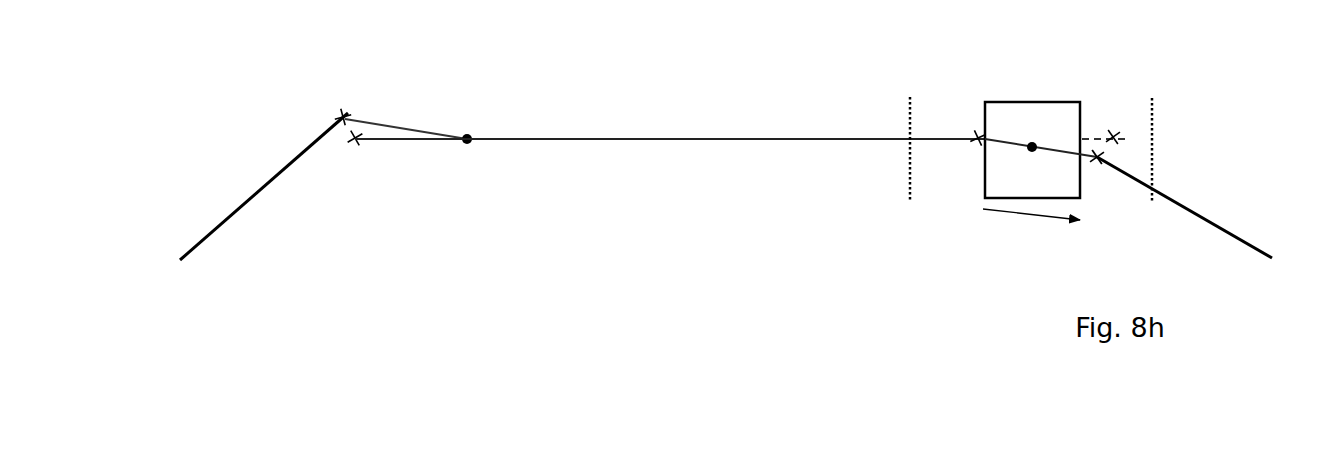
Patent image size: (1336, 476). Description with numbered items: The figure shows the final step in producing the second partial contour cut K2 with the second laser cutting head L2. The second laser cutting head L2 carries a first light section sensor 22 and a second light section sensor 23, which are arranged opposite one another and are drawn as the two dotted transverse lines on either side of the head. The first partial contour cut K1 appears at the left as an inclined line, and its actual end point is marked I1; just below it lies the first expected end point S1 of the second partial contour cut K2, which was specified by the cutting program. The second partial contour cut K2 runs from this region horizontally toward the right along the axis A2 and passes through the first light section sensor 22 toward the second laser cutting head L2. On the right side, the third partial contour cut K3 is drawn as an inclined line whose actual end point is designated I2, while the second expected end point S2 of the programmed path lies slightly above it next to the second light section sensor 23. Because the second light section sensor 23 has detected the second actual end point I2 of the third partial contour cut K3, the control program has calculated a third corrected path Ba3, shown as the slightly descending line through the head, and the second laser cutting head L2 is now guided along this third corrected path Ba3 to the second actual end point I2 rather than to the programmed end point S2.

The first partial contour cut K1 is at (264, 186).
The first actual end point I1 is at (341, 115).
The first expected end point S1 is at (354, 141).
The second partial contour cut K2 is at (670, 117).
The second optical axis A2 is at (790, 161).
The first light section sensor 22 is at (908, 117).
The third corrected path Ba3 is at (1058, 150).
The second laser cutting head L2 is at (1031, 152).
The second expected end point S2 is at (1114, 133).
The second light section sensor 23 is at (1153, 147).
The second actual end point I2 is at (1099, 160).
The third partial contour cut K3 is at (1184, 207).